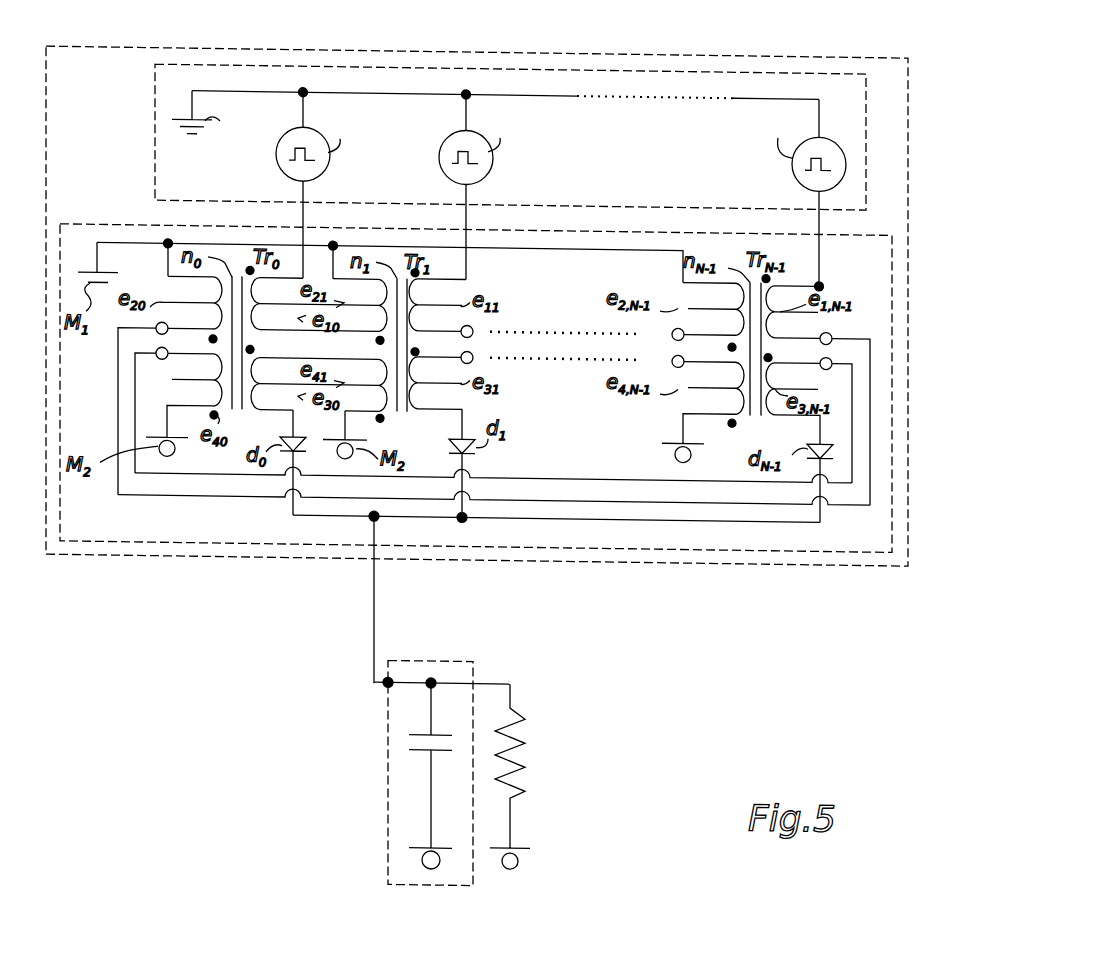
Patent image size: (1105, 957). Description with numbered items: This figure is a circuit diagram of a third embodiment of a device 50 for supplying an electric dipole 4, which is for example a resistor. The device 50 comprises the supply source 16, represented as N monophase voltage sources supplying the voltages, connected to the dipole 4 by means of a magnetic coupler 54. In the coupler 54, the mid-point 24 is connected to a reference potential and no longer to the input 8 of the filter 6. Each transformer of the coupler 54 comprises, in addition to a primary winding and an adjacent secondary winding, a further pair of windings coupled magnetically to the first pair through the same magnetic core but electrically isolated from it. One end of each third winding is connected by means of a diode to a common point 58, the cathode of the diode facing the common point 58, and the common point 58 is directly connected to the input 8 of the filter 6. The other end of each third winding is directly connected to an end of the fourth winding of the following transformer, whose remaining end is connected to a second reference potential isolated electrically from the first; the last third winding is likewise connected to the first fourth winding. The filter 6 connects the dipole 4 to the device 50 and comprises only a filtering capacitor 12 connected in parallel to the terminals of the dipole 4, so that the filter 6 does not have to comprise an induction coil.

The device 50 is at (912, 71).
The supply source 16 is at (870, 117).
The mid-point 24 is at (333, 241).
The magnetic coupler 54 is at (896, 377).
The common point 58 is at (378, 515).
The input 8 is at (388, 681).
The filtering capacitor 12 is at (408, 744).
The electric dipole 4 is at (525, 738).
The filter 6 is at (482, 866).